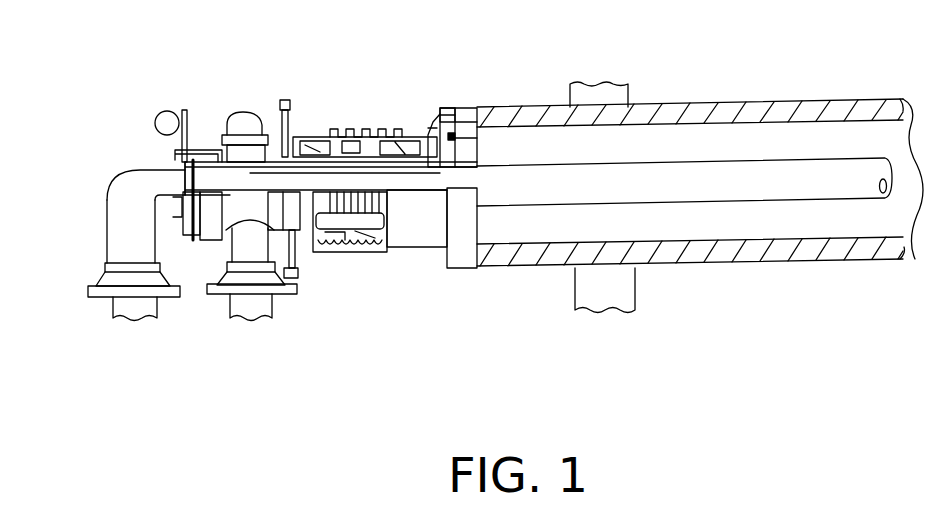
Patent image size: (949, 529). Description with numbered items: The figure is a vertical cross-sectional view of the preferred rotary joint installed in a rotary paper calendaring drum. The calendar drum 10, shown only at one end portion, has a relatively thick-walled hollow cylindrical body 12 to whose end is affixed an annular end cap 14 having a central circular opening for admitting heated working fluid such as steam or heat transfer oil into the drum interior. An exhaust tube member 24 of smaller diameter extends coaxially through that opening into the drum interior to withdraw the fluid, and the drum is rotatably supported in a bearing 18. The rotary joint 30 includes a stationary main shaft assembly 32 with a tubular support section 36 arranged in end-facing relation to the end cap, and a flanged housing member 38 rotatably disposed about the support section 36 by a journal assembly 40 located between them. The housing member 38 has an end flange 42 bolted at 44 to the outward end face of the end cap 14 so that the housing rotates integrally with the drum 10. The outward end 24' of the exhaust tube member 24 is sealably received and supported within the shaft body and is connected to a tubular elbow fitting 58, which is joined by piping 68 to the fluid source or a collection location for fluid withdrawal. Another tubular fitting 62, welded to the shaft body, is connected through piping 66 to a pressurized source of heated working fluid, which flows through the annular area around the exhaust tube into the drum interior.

The calendar drum 10 is at (637, 86).
The hollow cylindrical body 12 is at (816, 254).
The end cap 14 is at (460, 254).
The bearing 18 is at (576, 296).
The exhaust tube member 24 is at (684, 243).
The outward end of exhaust tube member 24' is at (138, 167).
The rotary joint 30 is at (262, 92).
The main shaft assembly 32 is at (238, 215).
The tubular support section 36 is at (308, 187).
The flanged housing member 38 is at (405, 127).
The journal assembly 40 is at (360, 128).
The end flange 42 is at (452, 108).
The bolt 44 is at (441, 112).
The tubular elbow fitting member 58 is at (123, 206).
The tubular fitting member 62 is at (262, 273).
The piping 66 is at (250, 300).
The piping 68 is at (114, 304).